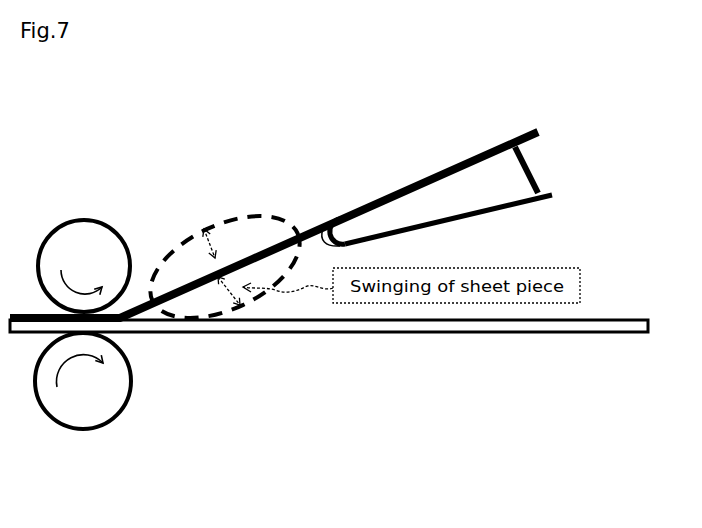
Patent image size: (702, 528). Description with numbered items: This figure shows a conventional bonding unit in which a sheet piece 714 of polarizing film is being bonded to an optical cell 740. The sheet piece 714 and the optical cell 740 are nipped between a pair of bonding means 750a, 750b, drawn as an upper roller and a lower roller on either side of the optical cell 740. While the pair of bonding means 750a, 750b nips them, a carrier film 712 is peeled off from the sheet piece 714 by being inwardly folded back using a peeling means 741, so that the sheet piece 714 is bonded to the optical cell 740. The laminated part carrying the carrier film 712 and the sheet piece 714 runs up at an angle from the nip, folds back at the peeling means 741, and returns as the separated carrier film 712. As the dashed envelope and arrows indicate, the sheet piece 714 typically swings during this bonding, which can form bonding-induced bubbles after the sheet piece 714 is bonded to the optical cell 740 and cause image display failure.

The carrier film 712 is at (481, 151).
The sheet piece 714 is at (182, 273).
The optical cell 740 is at (447, 334).
The peeling means 741 is at (528, 171).
The bonding means 750a is at (86, 233).
The bonding means 750b is at (83, 430).